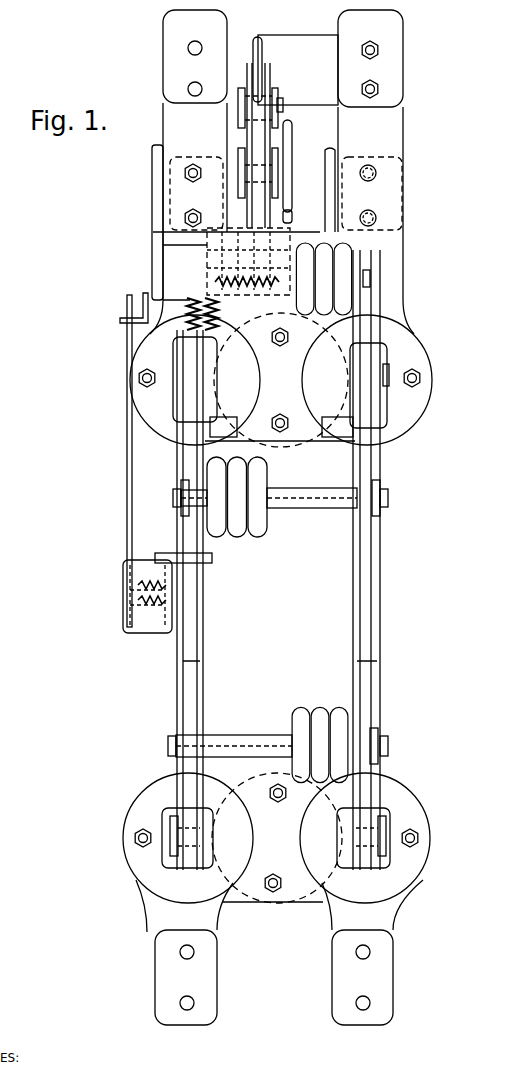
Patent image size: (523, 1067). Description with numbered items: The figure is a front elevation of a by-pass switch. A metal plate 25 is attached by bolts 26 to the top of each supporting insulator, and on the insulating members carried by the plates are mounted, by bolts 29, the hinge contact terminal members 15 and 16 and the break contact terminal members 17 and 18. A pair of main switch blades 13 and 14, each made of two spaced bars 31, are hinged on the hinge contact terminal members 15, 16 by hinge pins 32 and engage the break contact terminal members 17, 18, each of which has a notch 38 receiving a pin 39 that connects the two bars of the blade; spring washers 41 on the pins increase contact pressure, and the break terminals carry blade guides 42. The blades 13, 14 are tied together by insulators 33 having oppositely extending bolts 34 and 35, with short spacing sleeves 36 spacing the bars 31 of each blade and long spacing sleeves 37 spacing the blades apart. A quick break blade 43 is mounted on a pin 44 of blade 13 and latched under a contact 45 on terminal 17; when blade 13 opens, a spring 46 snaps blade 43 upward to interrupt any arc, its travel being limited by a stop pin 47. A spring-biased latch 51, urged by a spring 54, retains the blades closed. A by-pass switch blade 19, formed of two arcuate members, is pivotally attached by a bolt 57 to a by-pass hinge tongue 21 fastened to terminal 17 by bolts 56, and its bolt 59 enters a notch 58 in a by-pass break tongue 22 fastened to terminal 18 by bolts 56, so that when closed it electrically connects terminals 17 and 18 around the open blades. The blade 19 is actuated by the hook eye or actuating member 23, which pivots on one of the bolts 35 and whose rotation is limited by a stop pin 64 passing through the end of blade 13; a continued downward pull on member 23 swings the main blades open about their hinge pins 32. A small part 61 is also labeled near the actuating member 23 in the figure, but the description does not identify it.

The switch blade 13 is at (151, 683).
The switch blade 14 is at (388, 683).
The hinge contact terminal member 15 is at (150, 919).
The hinge contact terminal member 16 is at (393, 922).
The break contact terminal member 17 is at (163, 84).
The break contact terminal member 18 is at (403, 119).
The by-pass switch blade 19 is at (253, 62).
The by-pass hinge tongue 21 is at (200, 157).
The by-pass break tongue 22 is at (320, 35).
The actuating member 23 is at (325, 174).
The metal plate 25 is at (322, 443).
The bolt 26 is at (280, 414).
The bolt 29 is at (139, 378).
The bar 31 is at (200, 661).
The hinge pin 32 is at (389, 832).
The insulator 33 is at (352, 251).
The bolt 34 is at (173, 499).
The bolt 35 is at (388, 498).
The spacing sleeve 36 is at (184, 486).
The spacing sleeve 37 is at (318, 508).
The notch 38 is at (383, 430).
The pin 39 is at (389, 374).
The spring washer 41 is at (238, 96).
The blade guide 42 is at (183, 430).
The quick break blade 43 is at (127, 499).
The pin 44 is at (123, 599).
The contact 45 is at (120, 321).
The spring 46 is at (155, 633).
The stop pin 47 is at (210, 563).
The latch 51 is at (188, 318).
The spring 54 is at (218, 322).
The bolt 56 is at (378, 52).
The bolt 57 is at (291, 170).
The notch 58 is at (265, 72).
The bolt 59 is at (283, 108).
The pin 61 is at (292, 225).
The stop pin 64 is at (207, 242).